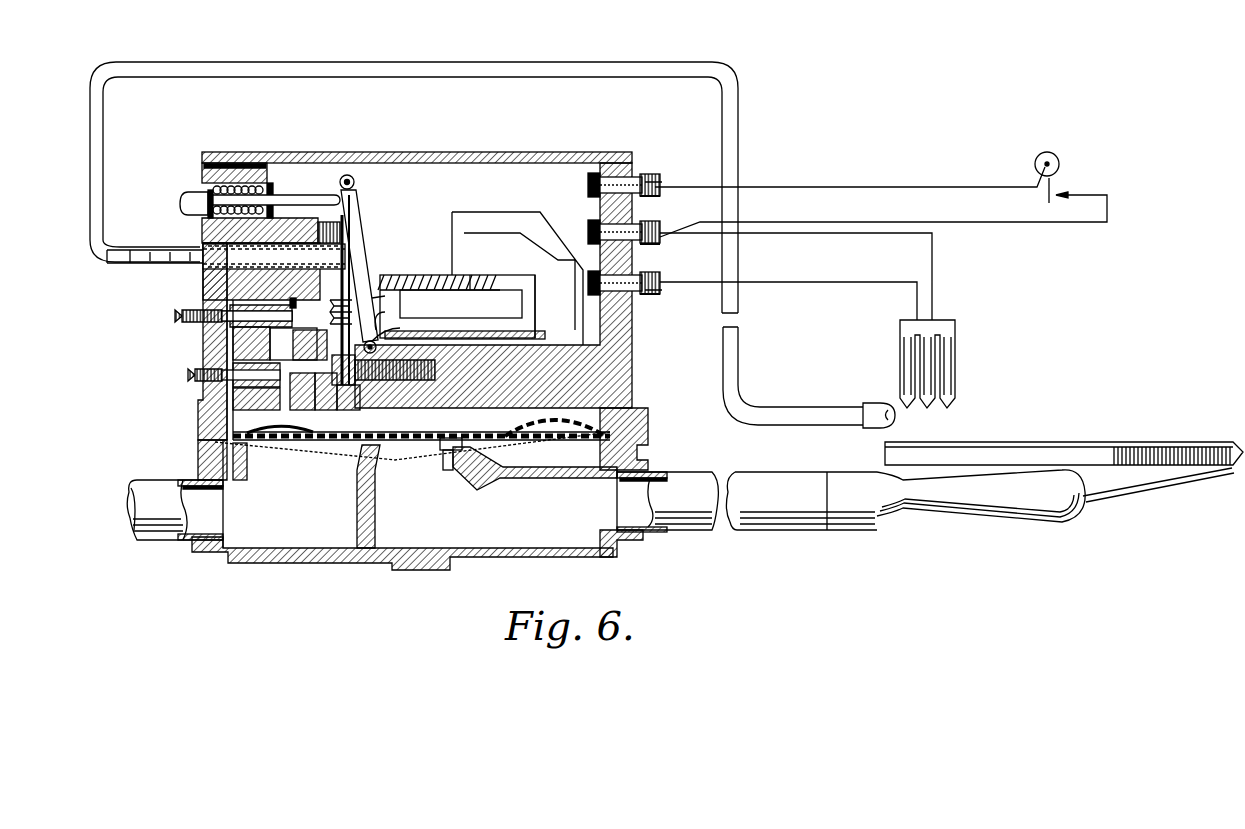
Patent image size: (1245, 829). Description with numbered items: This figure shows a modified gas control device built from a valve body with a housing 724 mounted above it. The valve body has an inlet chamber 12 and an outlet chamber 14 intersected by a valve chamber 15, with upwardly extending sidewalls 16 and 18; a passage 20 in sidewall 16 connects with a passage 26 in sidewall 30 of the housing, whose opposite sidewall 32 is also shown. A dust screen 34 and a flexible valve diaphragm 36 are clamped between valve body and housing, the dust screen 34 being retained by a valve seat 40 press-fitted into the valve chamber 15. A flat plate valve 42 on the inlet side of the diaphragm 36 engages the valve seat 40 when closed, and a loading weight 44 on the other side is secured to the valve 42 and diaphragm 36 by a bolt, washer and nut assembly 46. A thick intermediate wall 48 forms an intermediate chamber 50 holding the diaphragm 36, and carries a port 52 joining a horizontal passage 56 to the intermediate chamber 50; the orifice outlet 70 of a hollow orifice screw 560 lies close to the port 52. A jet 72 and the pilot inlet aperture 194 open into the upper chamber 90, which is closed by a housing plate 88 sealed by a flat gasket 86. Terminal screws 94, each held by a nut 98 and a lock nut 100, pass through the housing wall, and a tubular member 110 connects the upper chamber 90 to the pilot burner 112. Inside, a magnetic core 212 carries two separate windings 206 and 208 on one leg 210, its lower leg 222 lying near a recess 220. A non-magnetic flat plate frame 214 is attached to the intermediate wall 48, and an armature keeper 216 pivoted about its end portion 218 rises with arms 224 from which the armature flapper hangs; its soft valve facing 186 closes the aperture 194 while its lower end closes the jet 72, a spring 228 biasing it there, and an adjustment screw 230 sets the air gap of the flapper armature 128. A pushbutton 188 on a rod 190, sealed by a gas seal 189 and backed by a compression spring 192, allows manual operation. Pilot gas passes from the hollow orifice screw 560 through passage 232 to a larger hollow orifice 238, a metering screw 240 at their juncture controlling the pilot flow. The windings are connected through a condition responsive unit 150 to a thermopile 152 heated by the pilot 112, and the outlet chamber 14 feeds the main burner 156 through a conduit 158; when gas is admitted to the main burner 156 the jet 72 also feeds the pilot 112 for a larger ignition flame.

The inlet chamber 12 is at (293, 502).
The outlet chamber 14 is at (582, 505).
The valve chamber 15 is at (408, 508).
The sidewall 16 is at (210, 462).
The sidewall 18 is at (640, 452).
The passage 20 is at (240, 464).
The passage 26 is at (215, 407).
The sidewall 30 is at (210, 418).
The sidewall 32 is at (640, 413).
The dust screen 34 is at (340, 458).
The valve diaphragm 36 is at (572, 420).
The valve seat 40 is at (393, 468).
The flat plate valve 42 is at (462, 443).
The loading weight 44 is at (372, 432).
The bolt, washer and nut assembly 46 is at (425, 470).
The intermediate wall 48 is at (460, 405).
The intermediate chamber 50 is at (510, 415).
The port 52 is at (282, 408).
The horizontal passage 56 is at (302, 401).
The orifice outlet 70 is at (288, 345).
The jet 72 is at (326, 401).
The flat gasket 86 is at (632, 158).
The housing plate 88 is at (578, 152).
The upper chamber 90 is at (517, 253).
The terminal screw 94 is at (622, 185).
The nut 98 is at (650, 200).
The lock nut 100 is at (660, 294).
The tubular member 110 is at (740, 115).
The pilot burner 112 is at (884, 408).
The flapper armature 128 is at (350, 268).
The condition responsive unit 150 is at (881, 194).
The thermopile 152 is at (819, 320).
The main burner 156 is at (1060, 472).
The conduit 158 is at (745, 530).
The valve facing 186 is at (346, 250).
The pushbutton 188 is at (192, 195).
The gas seal 189 is at (283, 188).
The rod 190 is at (292, 196).
The compression spring 192 is at (232, 163).
The aperture 194 is at (320, 232).
The winding 206 is at (405, 275).
The winding 208 is at (475, 275).
The leg 210 is at (455, 283).
The magnetic core 212 is at (535, 300).
The flat plate frame 214 is at (548, 336).
The armature keeper 216 is at (386, 297).
The end portion 218 is at (386, 321).
The recess 220 is at (349, 407).
The lower leg 222 is at (418, 325).
The upwardly extending arms 224 is at (358, 188).
The spring 228 is at (346, 310).
The adjustment screw 230 is at (385, 376).
The passage 232 is at (220, 340).
The hollow orifice 238 is at (298, 295).
The metering screw 240 is at (182, 318).
The hollow orifice screw 560 is at (190, 378).
The housing 724 is at (205, 288).